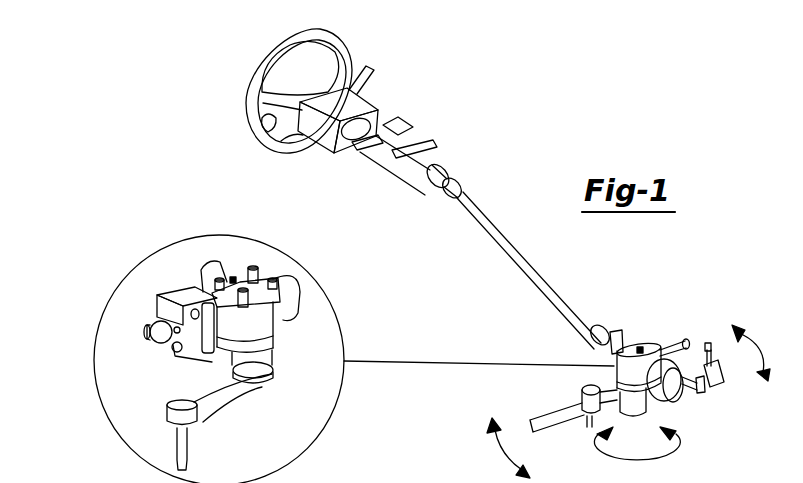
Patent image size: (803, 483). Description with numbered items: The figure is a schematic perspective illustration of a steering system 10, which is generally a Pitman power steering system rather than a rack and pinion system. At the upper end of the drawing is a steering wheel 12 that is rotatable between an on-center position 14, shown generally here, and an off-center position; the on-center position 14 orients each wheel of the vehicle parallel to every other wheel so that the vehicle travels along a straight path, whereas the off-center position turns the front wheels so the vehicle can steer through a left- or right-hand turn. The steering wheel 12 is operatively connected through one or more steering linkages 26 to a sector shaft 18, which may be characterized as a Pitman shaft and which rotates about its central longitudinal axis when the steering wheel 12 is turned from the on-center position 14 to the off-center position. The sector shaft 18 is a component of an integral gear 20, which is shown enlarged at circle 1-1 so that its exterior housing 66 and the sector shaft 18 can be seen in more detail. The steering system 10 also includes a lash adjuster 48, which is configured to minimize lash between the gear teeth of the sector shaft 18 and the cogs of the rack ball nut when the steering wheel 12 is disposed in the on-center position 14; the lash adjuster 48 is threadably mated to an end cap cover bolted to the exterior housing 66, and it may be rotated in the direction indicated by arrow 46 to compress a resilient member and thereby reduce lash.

The steering system 10 is at (178, 58).
The steering wheel 12 is at (344, 54).
The on-center position 14 is at (416, 72).
The steering linkage 26 is at (518, 248).
The arrow 46 is at (468, 482).
The lash adjuster 48 is at (640, 348).
The circle 1-1 is at (348, 359).
The integral gear 20 is at (152, 363).
The exterior housing 66 is at (258, 336).
The sector shaft 18 is at (255, 380).